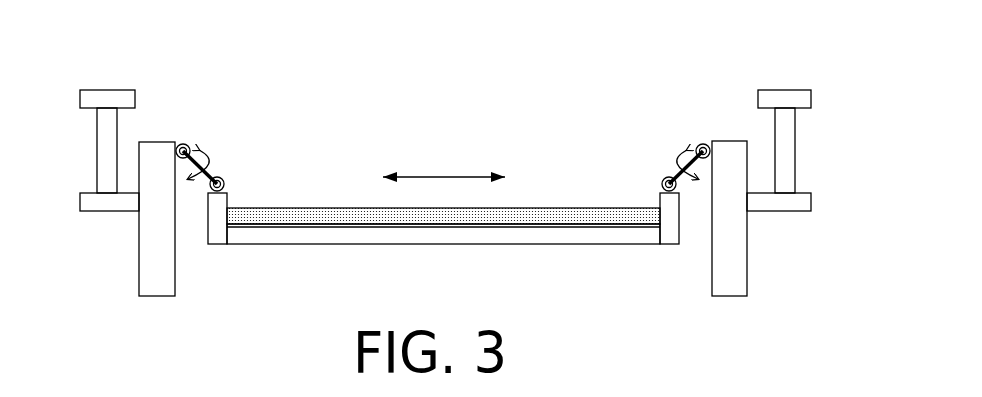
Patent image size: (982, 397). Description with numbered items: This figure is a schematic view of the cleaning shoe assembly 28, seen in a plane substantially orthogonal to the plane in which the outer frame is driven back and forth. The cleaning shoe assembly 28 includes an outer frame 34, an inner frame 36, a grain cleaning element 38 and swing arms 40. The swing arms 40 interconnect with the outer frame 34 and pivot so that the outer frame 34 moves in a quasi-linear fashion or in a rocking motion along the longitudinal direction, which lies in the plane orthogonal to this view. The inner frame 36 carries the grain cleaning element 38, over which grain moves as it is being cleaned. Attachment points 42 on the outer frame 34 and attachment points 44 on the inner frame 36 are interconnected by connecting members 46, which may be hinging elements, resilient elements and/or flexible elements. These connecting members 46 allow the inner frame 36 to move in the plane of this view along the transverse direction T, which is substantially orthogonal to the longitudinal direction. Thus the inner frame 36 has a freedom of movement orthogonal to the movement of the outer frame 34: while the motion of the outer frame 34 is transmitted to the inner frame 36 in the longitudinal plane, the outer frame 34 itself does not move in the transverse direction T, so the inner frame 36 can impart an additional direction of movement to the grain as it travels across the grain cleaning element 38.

The cleaning shoe assembly 28 is at (104, 36).
The outer frame 34 is at (158, 142).
The inner frame 36 is at (215, 244).
The grain cleaning element 38 is at (522, 207).
The swing arms 40 is at (97, 150).
The attachment points 42 is at (188, 146).
The attachment points 44 is at (224, 181).
The connecting members 46 is at (206, 164).
The transverse direction T is at (450, 176).